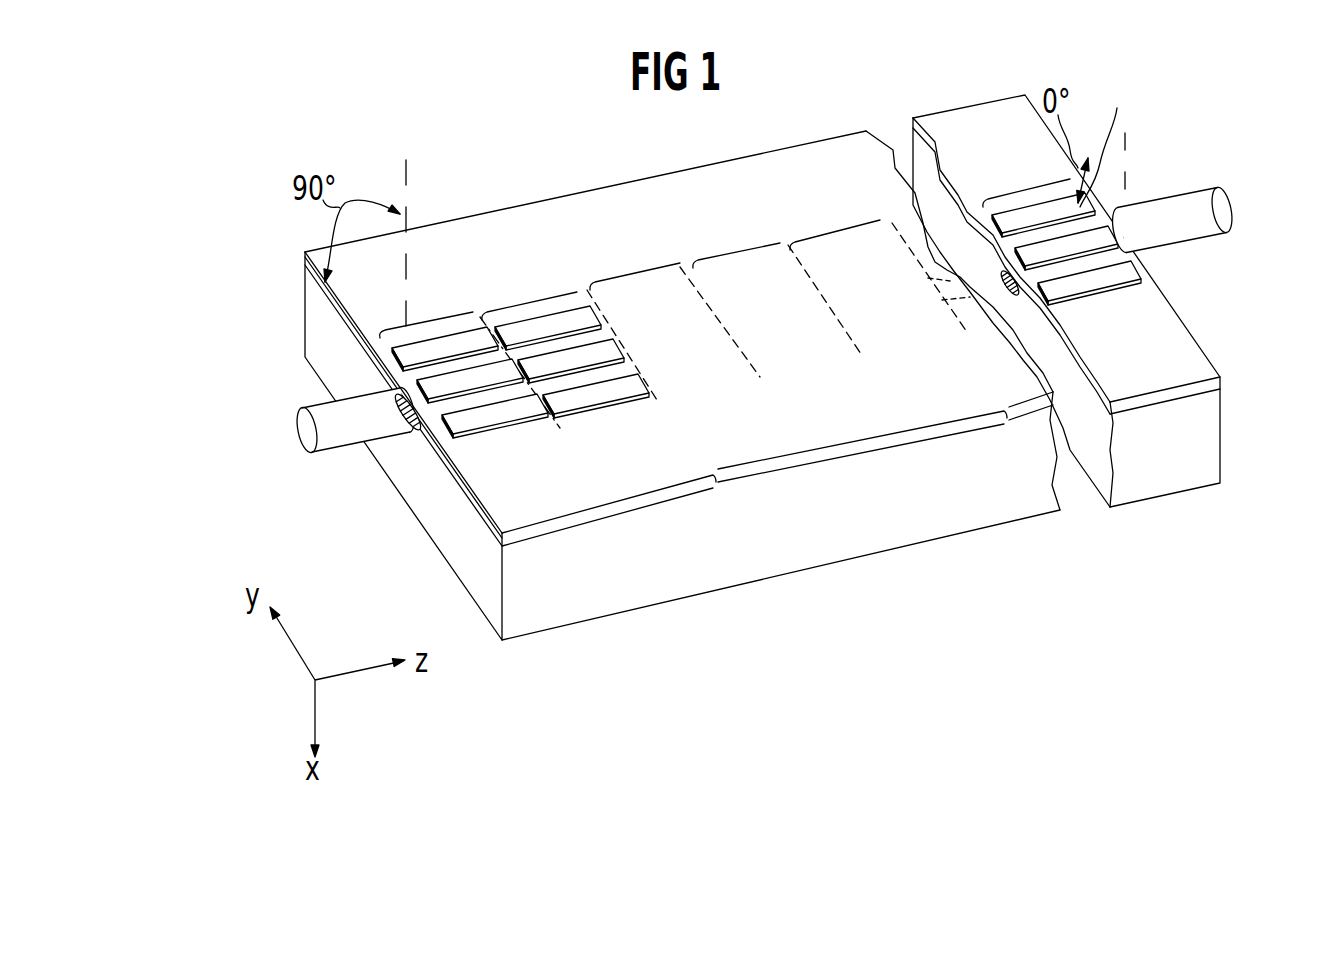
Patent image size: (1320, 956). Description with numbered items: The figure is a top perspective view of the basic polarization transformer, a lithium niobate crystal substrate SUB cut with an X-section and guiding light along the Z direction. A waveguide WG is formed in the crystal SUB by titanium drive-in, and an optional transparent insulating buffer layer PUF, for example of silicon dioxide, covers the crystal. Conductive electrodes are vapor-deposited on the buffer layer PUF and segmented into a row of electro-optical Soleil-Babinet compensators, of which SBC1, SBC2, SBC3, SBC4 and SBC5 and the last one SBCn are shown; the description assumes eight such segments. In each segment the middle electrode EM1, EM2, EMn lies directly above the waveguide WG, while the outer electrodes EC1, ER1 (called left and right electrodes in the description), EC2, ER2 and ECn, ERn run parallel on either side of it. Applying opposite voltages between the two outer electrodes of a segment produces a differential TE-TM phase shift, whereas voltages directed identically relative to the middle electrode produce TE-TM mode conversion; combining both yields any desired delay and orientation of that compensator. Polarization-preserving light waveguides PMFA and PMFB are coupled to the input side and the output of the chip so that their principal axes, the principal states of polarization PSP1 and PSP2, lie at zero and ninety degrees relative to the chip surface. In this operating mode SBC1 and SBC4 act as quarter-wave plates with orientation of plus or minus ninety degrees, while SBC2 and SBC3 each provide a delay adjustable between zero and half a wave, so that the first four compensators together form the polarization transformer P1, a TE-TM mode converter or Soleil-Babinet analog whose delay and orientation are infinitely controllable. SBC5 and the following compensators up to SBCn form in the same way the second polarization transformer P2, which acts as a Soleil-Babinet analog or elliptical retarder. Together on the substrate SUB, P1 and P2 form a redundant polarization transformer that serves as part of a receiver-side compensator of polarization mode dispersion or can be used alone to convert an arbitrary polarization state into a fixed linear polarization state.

The crystal substrate SUB is at (447, 540).
The buffer layer PUF is at (308, 257).
The waveguide WG is at (397, 420).
The polarization-preserving light waveguide PMFA is at (318, 403).
The polarization-preserving light waveguide PMFB is at (1190, 228).
The first polarization plane PSP1 is at (408, 172).
The second polarization plane PSP2 is at (340, 318).
The electro-optical Soleil-Babinet compensator SBC1 is at (466, 367).
The electro-optical Soleil-Babinet compensator SBC2 is at (574, 350).
The electro-optical Soleil-Babinet compensator SBC3 is at (628, 275).
The electro-optical Soleil-Babinet compensator SBC4 is at (730, 253).
The electro-optical Soleil-Babinet compensator SBC5 is at (830, 228).
The electro-optical Soleil-Babinet compensator SBCn is at (1064, 241).
The left electrode EC1 is at (413, 350).
The middle electrode EM1 is at (472, 378).
The right electrode ER1 is at (466, 418).
The left electrode EC2 is at (533, 325).
The middle electrode EM2 is at (575, 358).
The right electrode ER2 is at (565, 397).
The left electrode ECn is at (1015, 214).
The middle electrode EMn is at (1075, 246).
The right electrode ERn is at (1062, 287).
The polarization transformer P1 is at (718, 476).
The second polarization transformer P2 is at (1007, 423).